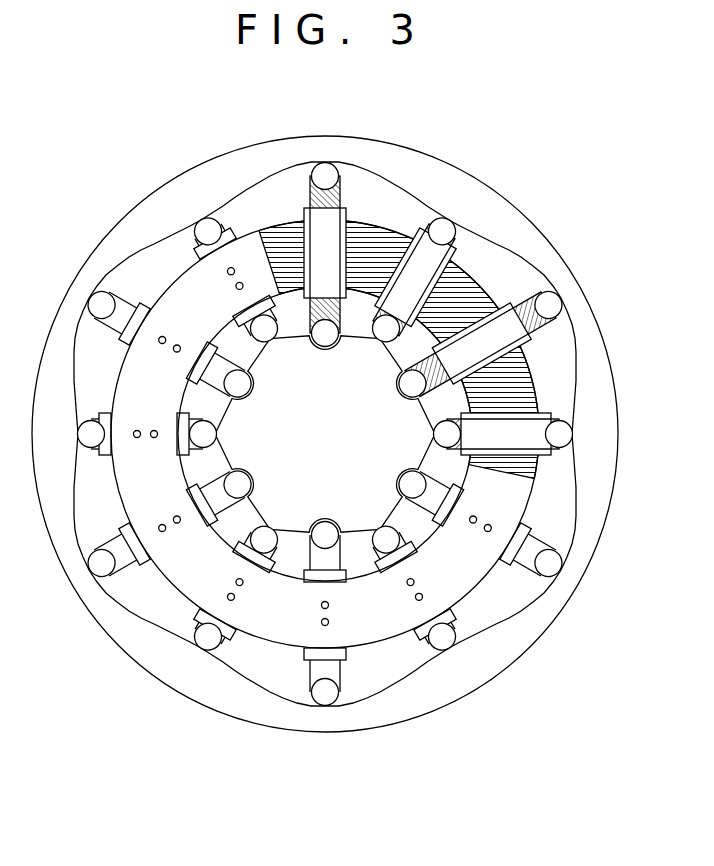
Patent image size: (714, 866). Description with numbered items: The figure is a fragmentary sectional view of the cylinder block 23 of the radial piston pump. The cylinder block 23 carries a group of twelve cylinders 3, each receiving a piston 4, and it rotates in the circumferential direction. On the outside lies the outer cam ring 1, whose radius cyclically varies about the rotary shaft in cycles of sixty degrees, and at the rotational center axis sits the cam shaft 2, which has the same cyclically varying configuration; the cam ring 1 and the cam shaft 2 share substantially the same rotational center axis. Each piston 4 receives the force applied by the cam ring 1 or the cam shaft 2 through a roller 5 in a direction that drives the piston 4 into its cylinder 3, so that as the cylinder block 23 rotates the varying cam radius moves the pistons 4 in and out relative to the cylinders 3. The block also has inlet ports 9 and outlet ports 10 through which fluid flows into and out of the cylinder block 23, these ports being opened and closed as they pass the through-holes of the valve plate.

The outer cam ring 1 is at (117, 622).
The cam shaft 2 is at (325, 434).
The cylinder 3 is at (405, 215).
The piston 4 is at (345, 198).
The roller 5 is at (326, 178).
The inlet port 9 is at (168, 338).
The outlet port 10 is at (174, 352).
The cylinder block 23 is at (200, 277).